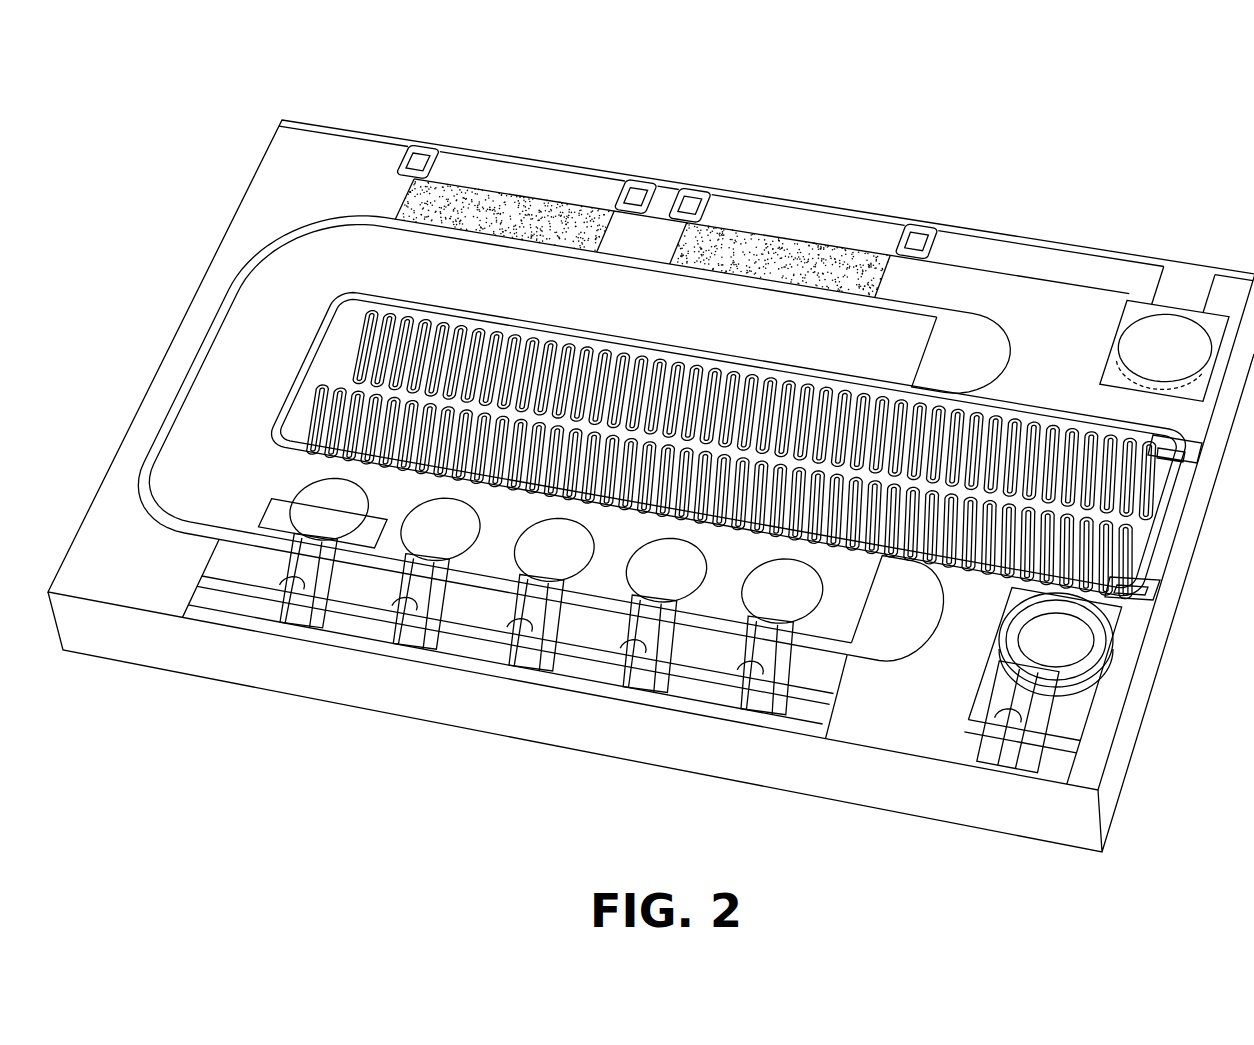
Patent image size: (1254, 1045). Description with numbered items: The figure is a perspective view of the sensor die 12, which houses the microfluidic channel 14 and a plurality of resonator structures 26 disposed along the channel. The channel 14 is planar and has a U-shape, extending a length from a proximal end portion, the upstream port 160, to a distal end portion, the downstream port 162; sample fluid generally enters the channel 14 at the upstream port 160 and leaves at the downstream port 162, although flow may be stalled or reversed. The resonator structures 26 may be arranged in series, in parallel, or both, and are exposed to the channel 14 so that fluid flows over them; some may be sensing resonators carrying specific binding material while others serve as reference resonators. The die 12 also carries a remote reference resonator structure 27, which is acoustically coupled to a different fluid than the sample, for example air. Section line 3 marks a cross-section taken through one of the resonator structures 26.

The die 12 is at (344, 124).
The microfluidic channel 14 is at (236, 330).
The upstream port 160 is at (943, 347).
The downstream port 162 is at (885, 622).
The resonator structure 26 is at (443, 537).
The remote reference resonator structure 27 is at (1053, 635).
The section line 3- 3 is at (317, 529).